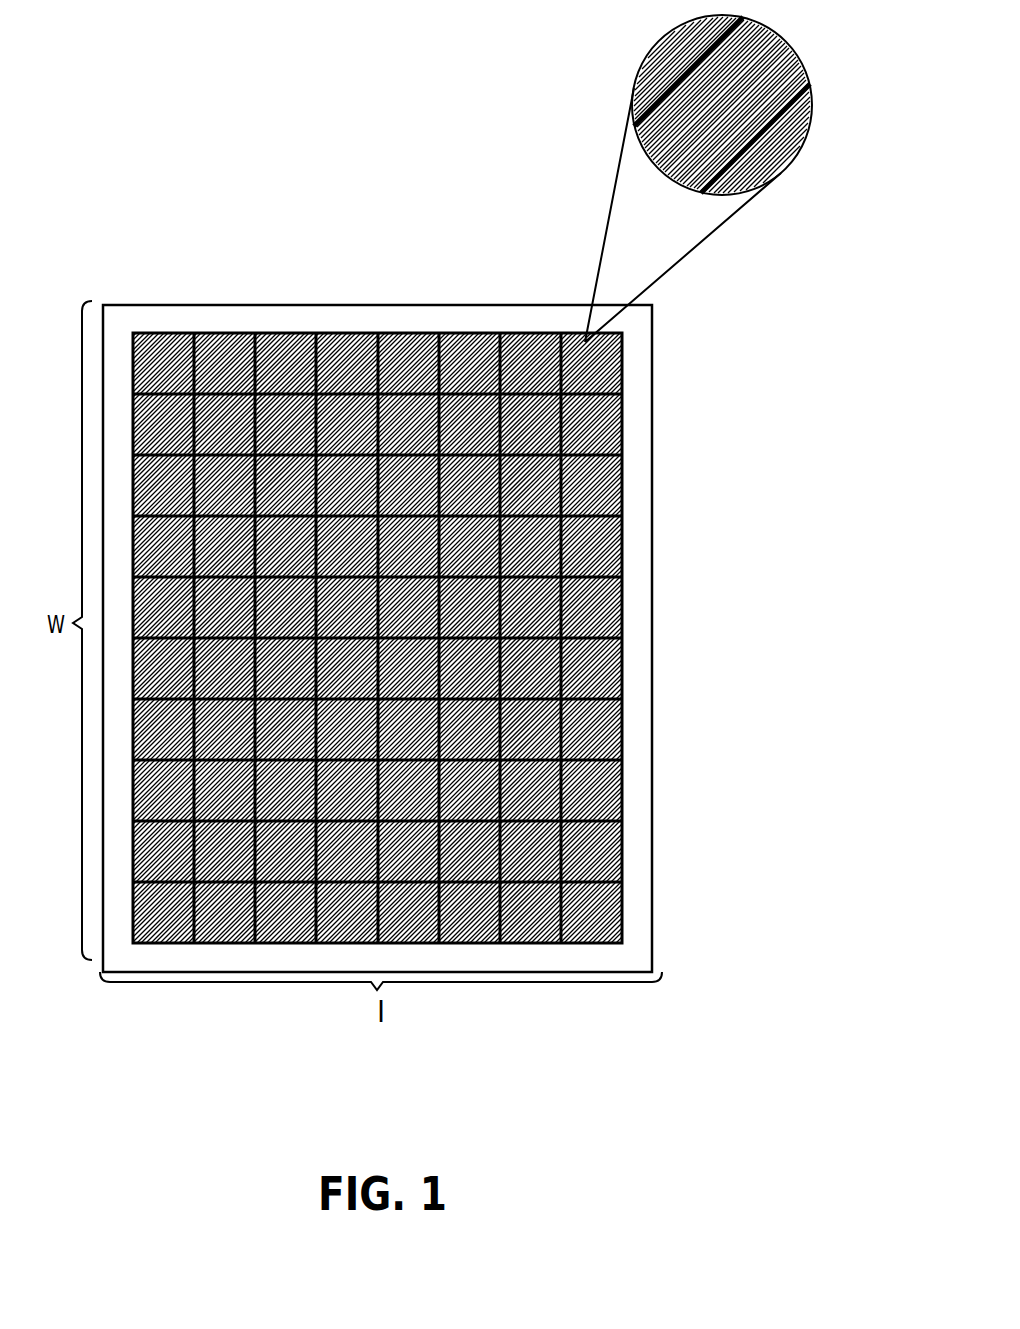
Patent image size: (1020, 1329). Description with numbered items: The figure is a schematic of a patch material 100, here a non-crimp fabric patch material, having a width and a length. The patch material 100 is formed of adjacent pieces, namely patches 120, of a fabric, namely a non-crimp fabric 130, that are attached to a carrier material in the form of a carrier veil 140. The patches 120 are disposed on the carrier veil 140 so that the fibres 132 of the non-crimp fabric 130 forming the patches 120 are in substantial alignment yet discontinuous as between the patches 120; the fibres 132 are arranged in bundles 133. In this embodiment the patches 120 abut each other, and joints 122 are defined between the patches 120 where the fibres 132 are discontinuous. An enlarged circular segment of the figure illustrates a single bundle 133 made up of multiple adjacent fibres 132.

The patch material 100 is at (152, 223).
The carrier veil 140 is at (388, 305).
The patches 120 is at (622, 368).
The joints 122 is at (602, 384).
The non-crimp fabric 130 is at (606, 347).
The bundle 133 is at (587, 343).
The fibres 132 is at (780, 128).